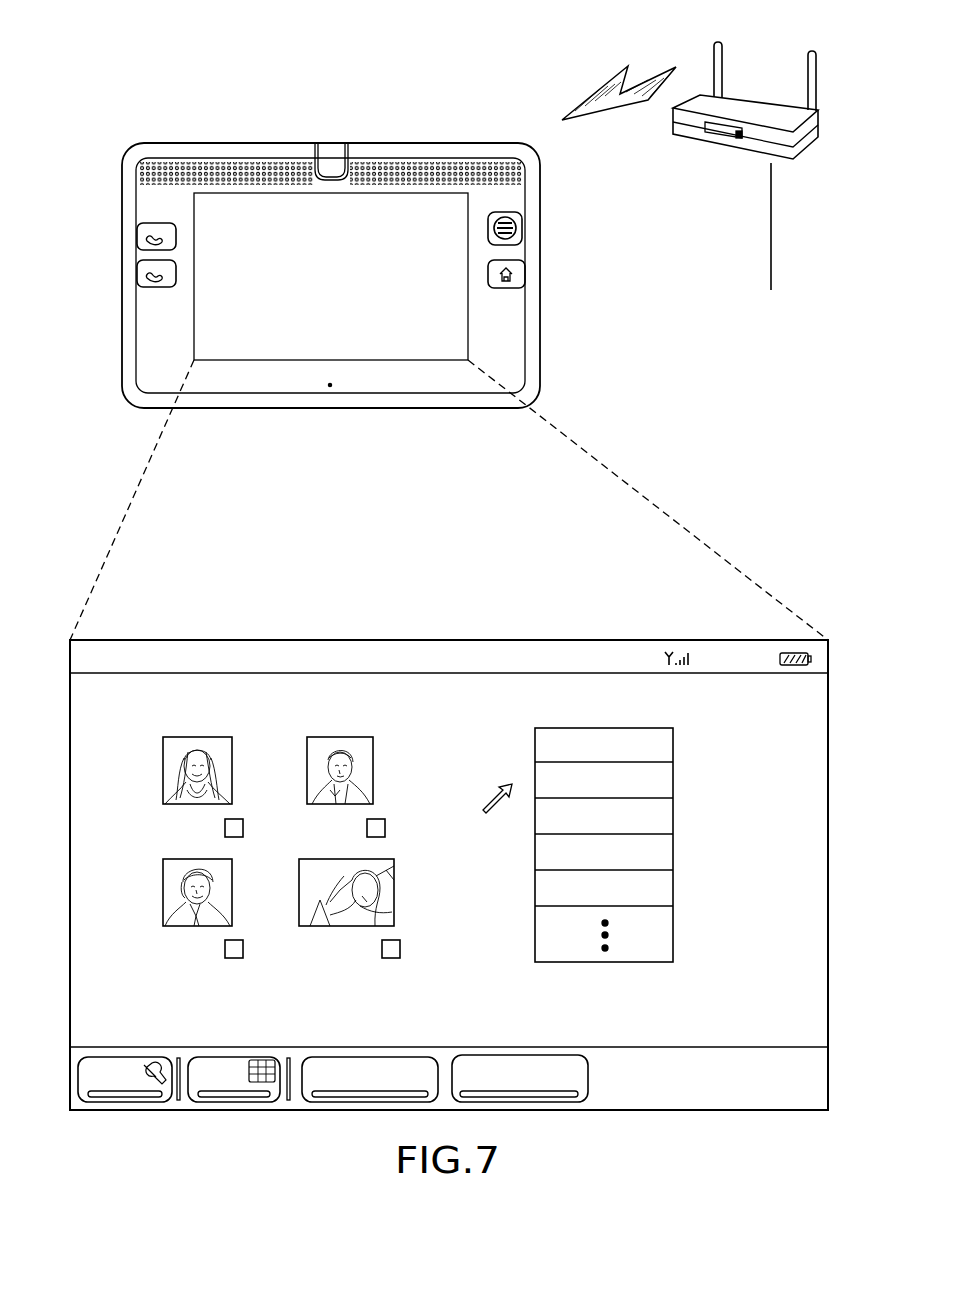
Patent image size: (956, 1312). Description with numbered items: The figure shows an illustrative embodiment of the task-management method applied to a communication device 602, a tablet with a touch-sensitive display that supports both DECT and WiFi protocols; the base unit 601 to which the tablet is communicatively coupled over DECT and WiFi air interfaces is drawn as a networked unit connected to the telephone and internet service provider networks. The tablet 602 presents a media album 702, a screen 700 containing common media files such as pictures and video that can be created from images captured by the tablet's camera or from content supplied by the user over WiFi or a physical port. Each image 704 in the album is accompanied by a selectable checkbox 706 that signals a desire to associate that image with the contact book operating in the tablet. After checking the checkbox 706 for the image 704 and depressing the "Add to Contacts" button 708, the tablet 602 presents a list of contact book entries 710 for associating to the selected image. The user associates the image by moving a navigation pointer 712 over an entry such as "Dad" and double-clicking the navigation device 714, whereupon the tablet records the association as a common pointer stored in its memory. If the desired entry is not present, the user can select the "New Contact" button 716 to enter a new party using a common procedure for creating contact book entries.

The router / base station 601 is at (673, 121).
The communication device 602 is at (540, 315).
The media album display screen 700 is at (449, 859).
The media album 702 is at (193, 640).
The image 704 is at (339, 737).
The selectable checkbox 706 is at (384, 815).
The add to contacts button 708 is at (364, 1102).
The list of contact book entries 710 is at (535, 770).
The navigation pointer 712 is at (484, 812).
The navigation device 714 is at (522, 235).
The new contact button 716 is at (512, 1102).